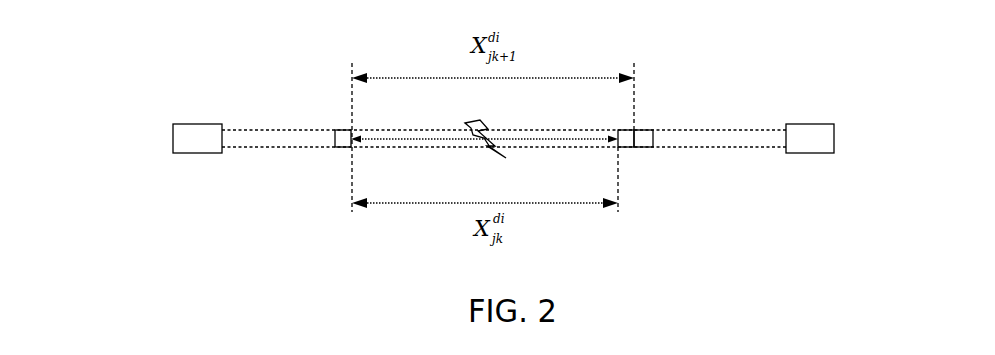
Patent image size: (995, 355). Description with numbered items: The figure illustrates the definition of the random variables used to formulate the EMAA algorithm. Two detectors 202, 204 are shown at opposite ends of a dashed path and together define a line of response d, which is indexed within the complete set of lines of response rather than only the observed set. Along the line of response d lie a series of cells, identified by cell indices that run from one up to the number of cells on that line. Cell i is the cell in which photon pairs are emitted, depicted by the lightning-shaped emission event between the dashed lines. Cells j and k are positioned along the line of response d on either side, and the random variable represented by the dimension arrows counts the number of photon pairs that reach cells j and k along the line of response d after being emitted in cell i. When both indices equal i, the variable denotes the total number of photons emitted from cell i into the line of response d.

The detector 202 is at (172, 139).
The detector 204 is at (834, 145).
The line of response d is at (730, 136).
The cell j is at (335, 130).
The cell k is at (627, 147).
The cell i is at (465, 123).